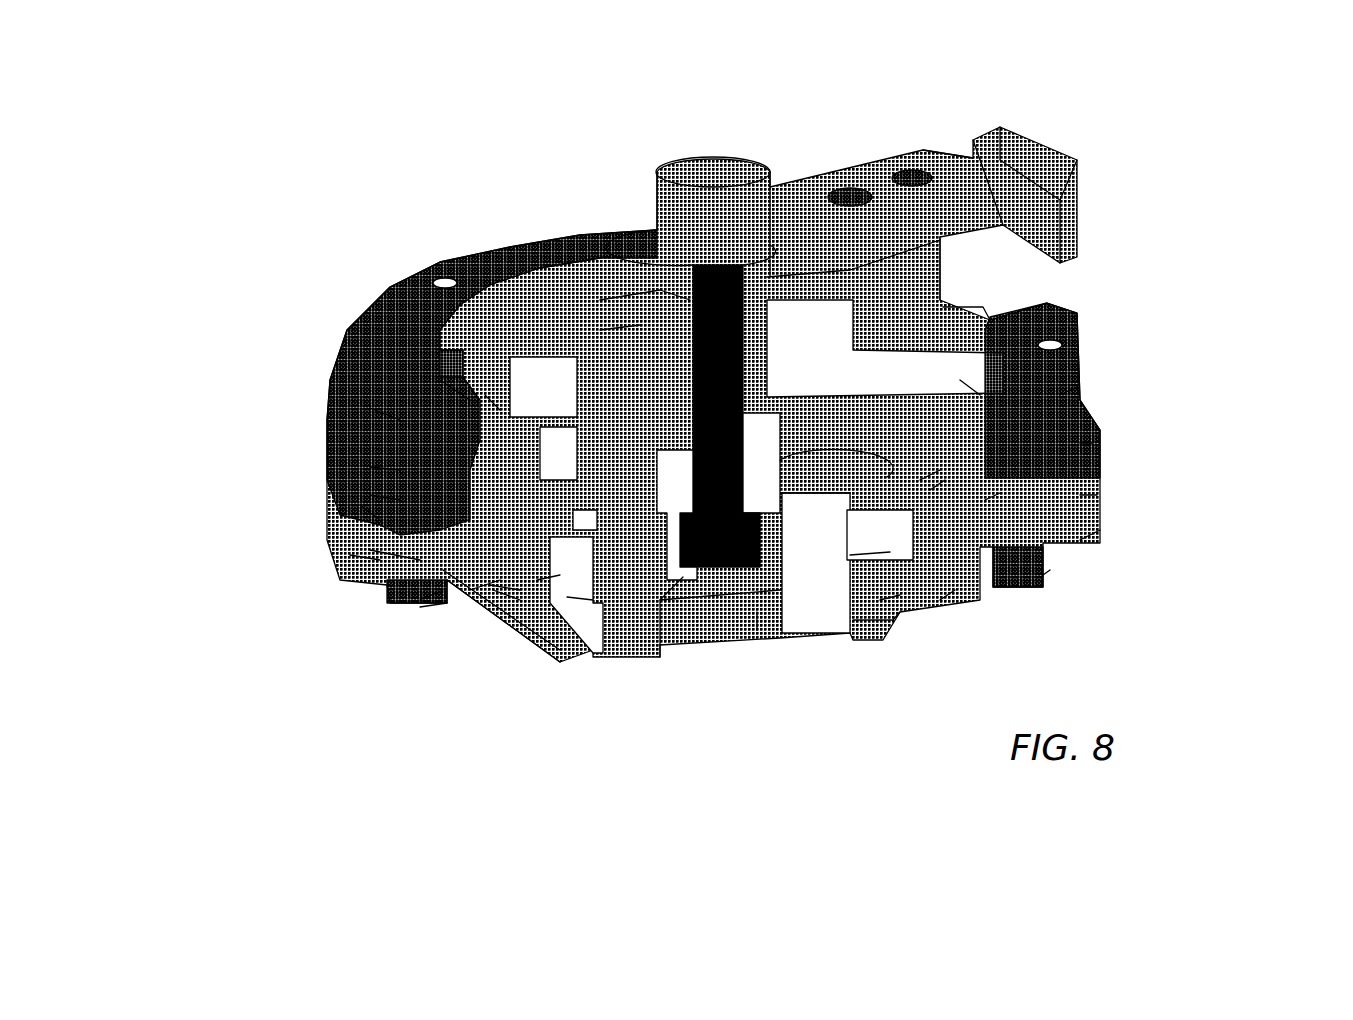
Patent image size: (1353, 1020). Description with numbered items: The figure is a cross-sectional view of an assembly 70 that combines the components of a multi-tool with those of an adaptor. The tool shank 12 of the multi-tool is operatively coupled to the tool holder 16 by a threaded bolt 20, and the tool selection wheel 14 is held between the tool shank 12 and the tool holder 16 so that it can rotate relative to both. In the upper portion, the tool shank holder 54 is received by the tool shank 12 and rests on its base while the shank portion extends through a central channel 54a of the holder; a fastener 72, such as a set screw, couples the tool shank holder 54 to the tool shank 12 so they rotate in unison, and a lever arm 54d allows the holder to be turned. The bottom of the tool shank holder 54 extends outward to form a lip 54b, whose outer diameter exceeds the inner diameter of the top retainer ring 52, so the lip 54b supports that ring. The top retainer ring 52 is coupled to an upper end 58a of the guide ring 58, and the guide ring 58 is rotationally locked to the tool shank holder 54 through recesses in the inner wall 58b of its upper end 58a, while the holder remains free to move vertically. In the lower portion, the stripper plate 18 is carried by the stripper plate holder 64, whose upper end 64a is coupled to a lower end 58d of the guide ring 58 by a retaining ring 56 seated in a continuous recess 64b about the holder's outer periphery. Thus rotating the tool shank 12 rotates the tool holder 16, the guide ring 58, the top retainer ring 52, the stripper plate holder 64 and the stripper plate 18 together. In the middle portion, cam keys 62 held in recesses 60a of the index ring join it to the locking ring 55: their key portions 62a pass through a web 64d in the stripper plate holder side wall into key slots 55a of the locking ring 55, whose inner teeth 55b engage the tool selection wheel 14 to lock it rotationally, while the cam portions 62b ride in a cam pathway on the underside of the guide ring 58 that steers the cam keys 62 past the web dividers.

The assembly 70 is at (388, 180).
The tool shank 12 is at (700, 157).
The tool selection wheel 14 is at (890, 552).
The tool holder 16 is at (900, 595).
The stripper plate 18 is at (955, 590).
The threaded bolt 20 is at (683, 577).
The top retainer ring 52 is at (470, 257).
The tool shank holder 54 is at (945, 320).
The central channel 54a is at (630, 300).
The lip 54b is at (983, 300).
The lever arm 54d is at (1033, 153).
The locking ring 55 is at (930, 490).
The key slots 55a is at (567, 597).
The inner teeth 55b is at (920, 480).
The retaining ring 56 is at (350, 555).
The guide ring 58 is at (345, 475).
The upper end 58a is at (370, 408).
The inner wall 58b is at (370, 467).
The lower end 58d is at (1000, 493).
The recesses 60a is at (360, 505).
The cam keys 62 is at (420, 600).
The key portions 62a is at (490, 585).
The cam portions 62b is at (370, 495).
The stripper plate holder 64 is at (1050, 570).
The upper end 64a is at (485, 395).
The continuous recess 64b is at (1097, 495).
The web 64d is at (470, 590).
The fastener 72 is at (625, 330).